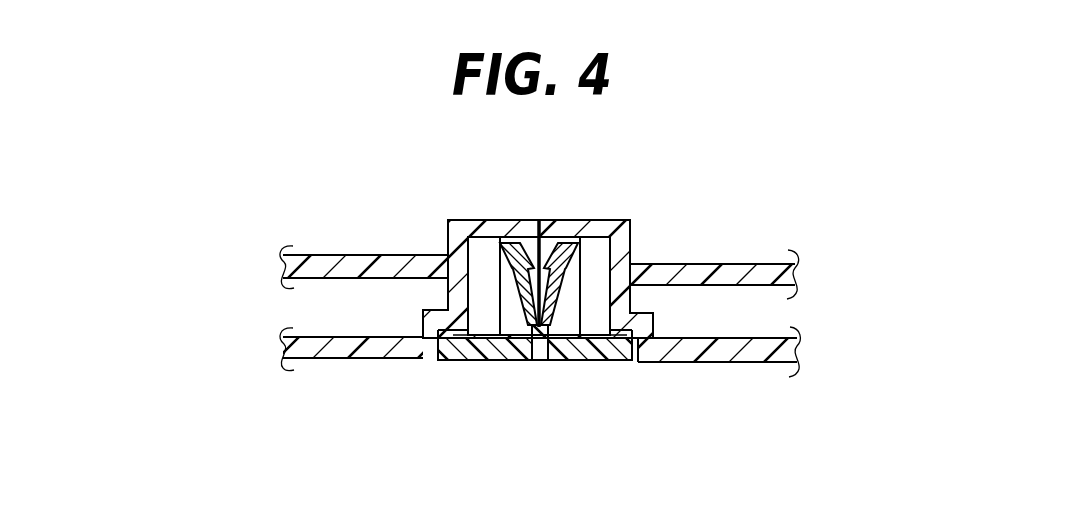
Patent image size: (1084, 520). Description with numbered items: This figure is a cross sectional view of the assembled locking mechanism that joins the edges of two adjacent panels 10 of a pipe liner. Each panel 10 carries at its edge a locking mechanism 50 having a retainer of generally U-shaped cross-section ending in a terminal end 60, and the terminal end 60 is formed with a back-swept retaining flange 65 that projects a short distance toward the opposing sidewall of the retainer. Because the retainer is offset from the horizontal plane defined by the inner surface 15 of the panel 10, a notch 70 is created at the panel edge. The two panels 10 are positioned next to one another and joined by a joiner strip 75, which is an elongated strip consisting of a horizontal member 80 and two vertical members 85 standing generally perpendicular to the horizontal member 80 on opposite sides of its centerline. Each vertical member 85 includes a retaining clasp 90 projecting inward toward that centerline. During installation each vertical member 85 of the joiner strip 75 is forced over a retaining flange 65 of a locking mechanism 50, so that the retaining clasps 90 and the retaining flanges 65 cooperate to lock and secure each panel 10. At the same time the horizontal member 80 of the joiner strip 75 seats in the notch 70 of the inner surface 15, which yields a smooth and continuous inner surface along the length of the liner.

The panel 10 is at (443, 226).
The inner surface 15 is at (323, 359).
The locking mechanism 50 is at (437, 251).
The terminal end 60 is at (532, 350).
The retaining flange 65 is at (453, 365).
The notch 70 is at (442, 362).
The joiner strip 75 is at (478, 372).
The horizontal member 80 is at (607, 362).
The vertical member 85 is at (498, 243).
The retaining clasp 90 is at (573, 244).